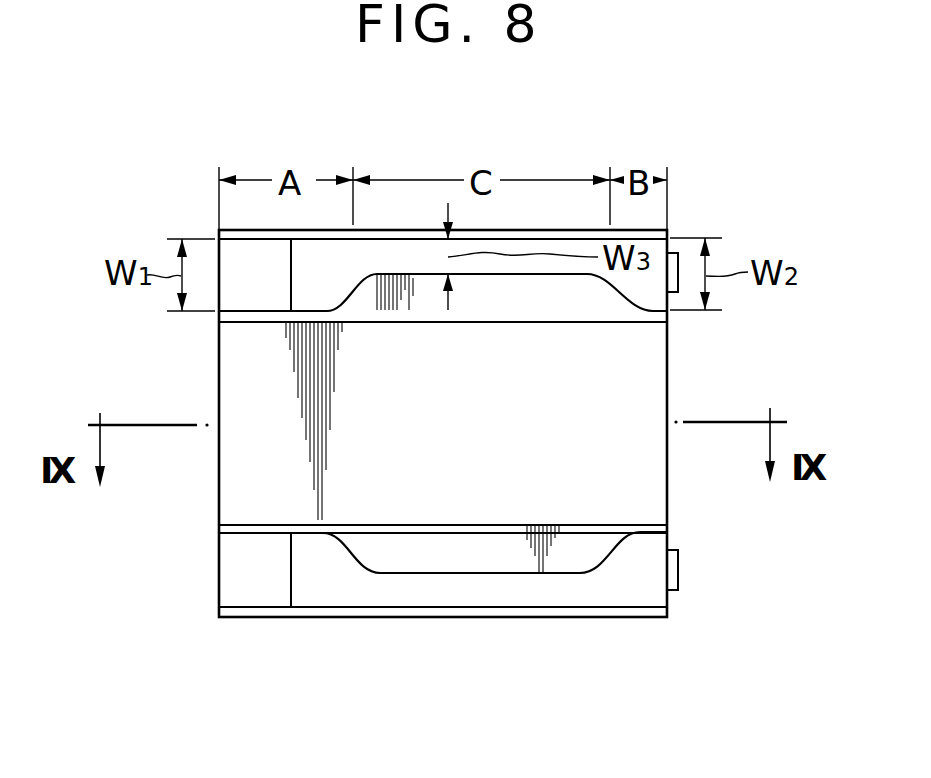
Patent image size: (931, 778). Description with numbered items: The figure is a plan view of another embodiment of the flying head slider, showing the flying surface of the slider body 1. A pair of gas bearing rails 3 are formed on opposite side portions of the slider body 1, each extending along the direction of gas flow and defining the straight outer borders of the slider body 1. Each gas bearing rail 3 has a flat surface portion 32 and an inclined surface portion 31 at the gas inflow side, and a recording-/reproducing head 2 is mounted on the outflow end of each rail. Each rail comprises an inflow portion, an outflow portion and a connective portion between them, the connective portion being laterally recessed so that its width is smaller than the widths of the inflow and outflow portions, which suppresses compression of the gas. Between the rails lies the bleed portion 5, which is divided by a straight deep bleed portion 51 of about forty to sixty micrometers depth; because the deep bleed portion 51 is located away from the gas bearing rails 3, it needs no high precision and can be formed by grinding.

The slider body 1 is at (213, 498).
The recording-/reproducing head 2 is at (674, 253).
The gas bearing rail 3 is at (536, 612).
The bleed portion 5 is at (550, 312).
The inclined surface portion 31 is at (222, 585).
The flat surface portion 32 is at (397, 607).
The deep bleed portion 51 is at (470, 497).